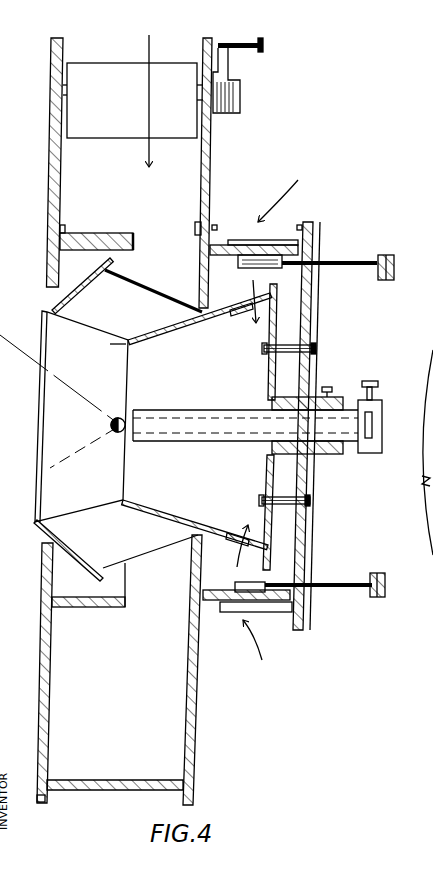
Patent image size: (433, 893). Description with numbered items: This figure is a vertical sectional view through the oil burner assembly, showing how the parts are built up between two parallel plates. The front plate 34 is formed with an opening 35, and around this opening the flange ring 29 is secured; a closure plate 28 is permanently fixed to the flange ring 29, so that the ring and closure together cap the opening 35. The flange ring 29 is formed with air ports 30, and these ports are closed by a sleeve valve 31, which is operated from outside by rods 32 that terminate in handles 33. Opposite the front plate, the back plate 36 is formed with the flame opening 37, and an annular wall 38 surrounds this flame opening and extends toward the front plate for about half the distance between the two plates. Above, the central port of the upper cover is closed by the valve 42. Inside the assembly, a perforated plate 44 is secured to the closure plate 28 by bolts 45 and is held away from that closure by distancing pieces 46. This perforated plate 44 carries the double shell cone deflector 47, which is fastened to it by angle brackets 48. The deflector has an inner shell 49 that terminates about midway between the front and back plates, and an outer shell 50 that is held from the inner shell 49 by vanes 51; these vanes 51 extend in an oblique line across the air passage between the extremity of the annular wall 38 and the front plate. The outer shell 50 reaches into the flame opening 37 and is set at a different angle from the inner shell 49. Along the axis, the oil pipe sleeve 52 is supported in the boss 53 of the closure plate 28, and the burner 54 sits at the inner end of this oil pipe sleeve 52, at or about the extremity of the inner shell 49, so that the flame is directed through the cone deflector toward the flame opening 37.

The closure plate 28 is at (318, 295).
The flange ring 29 is at (218, 238).
The air ports 30 is at (265, 237).
The sleeve valve 31 is at (238, 254).
The rods 32 is at (336, 261).
The handles 33 is at (395, 263).
The front plate 34 is at (212, 166).
The opening 35 is at (202, 362).
The back plate 36 is at (63, 184).
The flame opening 37 is at (64, 416).
The annular wall 38 is at (90, 233).
The valve 42 is at (100, 63).
The perforated plate 44 is at (266, 335).
The bolts 45 is at (316, 348).
The distancing pieces 46 is at (283, 344).
The double shell cone deflector 47 is at (75, 547).
The angle brackets 48 is at (240, 317).
The inner shell 49 is at (158, 333).
The outer shell 50 is at (78, 288).
The vanes 51 is at (150, 290).
The oil pipe sleeve 52 is at (195, 412).
The boss 53 is at (330, 455).
The burner 54 is at (115, 431).